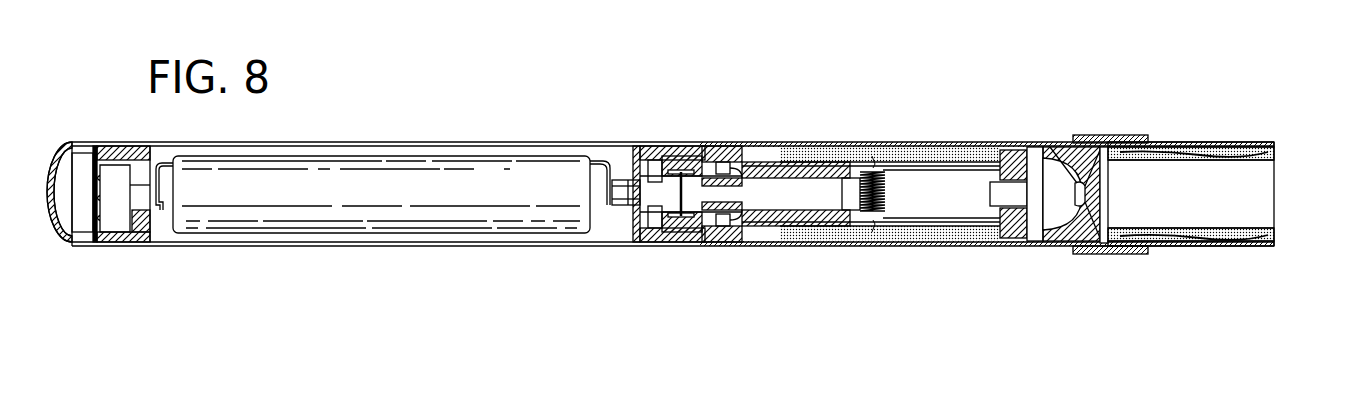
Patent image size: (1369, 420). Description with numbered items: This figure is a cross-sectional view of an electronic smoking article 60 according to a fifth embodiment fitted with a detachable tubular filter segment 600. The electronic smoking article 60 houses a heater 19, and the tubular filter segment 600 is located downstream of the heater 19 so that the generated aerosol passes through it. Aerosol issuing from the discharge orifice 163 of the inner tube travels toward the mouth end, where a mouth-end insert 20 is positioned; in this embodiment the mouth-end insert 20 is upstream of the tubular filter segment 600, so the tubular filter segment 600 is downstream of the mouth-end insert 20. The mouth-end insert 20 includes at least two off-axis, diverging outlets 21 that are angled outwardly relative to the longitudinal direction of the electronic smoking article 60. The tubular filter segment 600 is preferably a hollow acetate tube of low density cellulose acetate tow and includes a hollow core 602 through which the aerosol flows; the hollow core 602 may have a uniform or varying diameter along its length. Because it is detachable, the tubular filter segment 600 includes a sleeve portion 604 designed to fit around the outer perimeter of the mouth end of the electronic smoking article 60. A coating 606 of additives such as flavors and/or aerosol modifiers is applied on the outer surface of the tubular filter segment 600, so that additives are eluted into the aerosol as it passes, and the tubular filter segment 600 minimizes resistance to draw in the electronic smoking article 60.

The tubular filter segment 600 is at (1274, 240).
The hollow core 602 is at (1262, 195).
The sleeve portion 604 is at (1127, 135).
The coating 606 is at (1222, 141).
The electronic smoking article 60 is at (681, 145).
The heater 19 is at (885, 193).
The mouth-end insert 20 is at (1075, 168).
The outlets 21 is at (1088, 217).
The discharge orifice 163 is at (1030, 195).